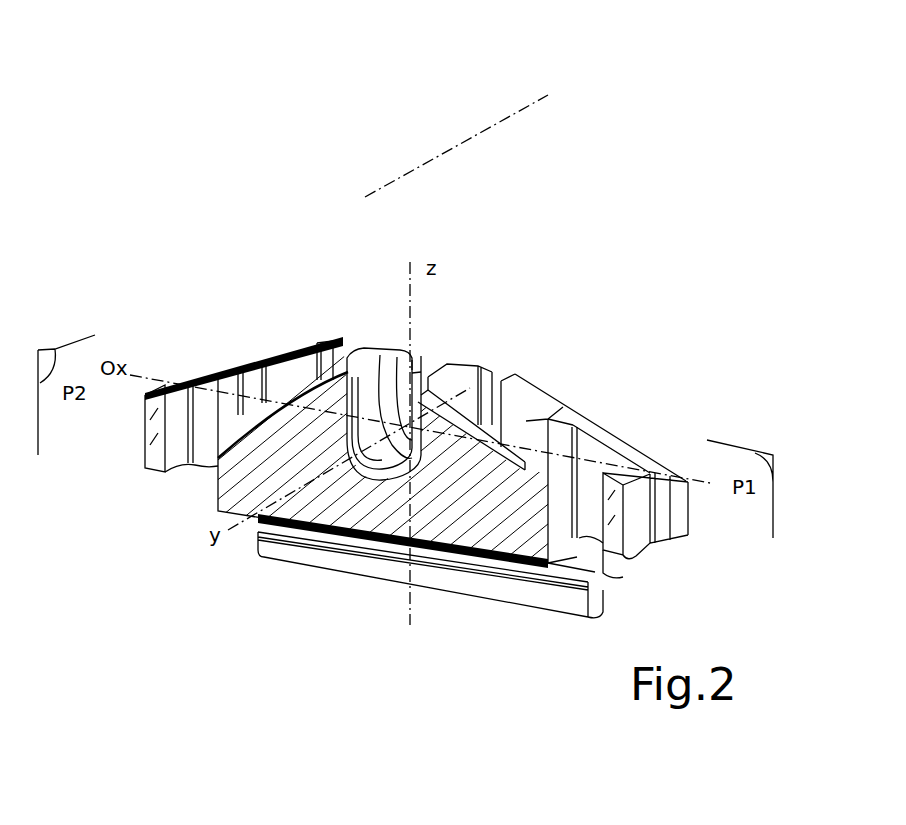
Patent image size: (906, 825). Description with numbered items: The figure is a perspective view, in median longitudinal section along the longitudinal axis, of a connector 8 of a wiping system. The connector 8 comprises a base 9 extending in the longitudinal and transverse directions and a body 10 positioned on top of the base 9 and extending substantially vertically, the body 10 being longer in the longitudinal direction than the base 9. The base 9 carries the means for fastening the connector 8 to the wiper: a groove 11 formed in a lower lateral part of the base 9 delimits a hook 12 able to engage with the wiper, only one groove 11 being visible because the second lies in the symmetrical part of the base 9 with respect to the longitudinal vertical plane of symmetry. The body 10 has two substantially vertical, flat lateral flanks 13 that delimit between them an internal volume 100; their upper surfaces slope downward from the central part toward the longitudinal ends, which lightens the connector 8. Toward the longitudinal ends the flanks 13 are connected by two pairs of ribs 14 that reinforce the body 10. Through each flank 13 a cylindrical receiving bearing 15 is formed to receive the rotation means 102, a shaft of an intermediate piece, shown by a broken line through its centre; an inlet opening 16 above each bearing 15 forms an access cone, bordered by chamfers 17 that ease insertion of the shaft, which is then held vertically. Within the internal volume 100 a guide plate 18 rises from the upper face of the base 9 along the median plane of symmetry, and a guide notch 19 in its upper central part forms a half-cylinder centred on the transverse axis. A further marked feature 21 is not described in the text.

The connector 8 is at (553, 297).
The base 9 is at (258, 550).
The body 10 is at (588, 407).
The groove 11 is at (620, 575).
The hook 12 is at (567, 630).
The lateral flank 13 is at (486, 375).
The ribs 14 is at (168, 380).
The receiving bearing 15 is at (408, 352).
The inlet opening 16 is at (418, 372).
The chamfers 17 is at (366, 402).
The guide plate 18 is at (300, 400).
The guide notch 19 is at (360, 378).
The notch 21 is at (523, 398).
The internal volume 100 is at (528, 404).
The rotation means 102 is at (457, 145).